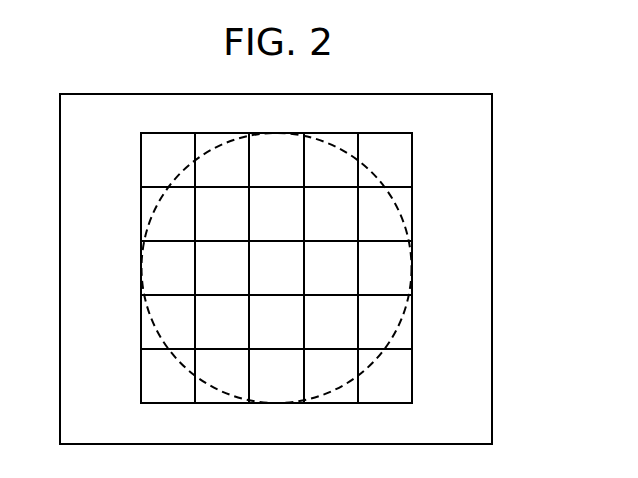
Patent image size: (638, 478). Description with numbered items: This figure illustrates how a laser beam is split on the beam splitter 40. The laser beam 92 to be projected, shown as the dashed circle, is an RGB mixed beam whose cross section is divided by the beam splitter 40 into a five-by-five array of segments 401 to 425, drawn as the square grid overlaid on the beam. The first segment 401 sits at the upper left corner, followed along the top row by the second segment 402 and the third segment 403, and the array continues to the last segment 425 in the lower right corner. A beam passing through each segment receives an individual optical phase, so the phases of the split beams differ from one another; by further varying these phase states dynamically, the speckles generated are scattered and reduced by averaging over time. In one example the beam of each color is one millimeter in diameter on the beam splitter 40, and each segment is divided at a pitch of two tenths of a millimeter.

The beam splitter 40 is at (495, 133).
The segment 401 is at (153, 158).
The segment 402 is at (213, 142).
The segment 403 is at (291, 144).
The laser beam 92 is at (402, 208).
The segment 425 is at (399, 381).